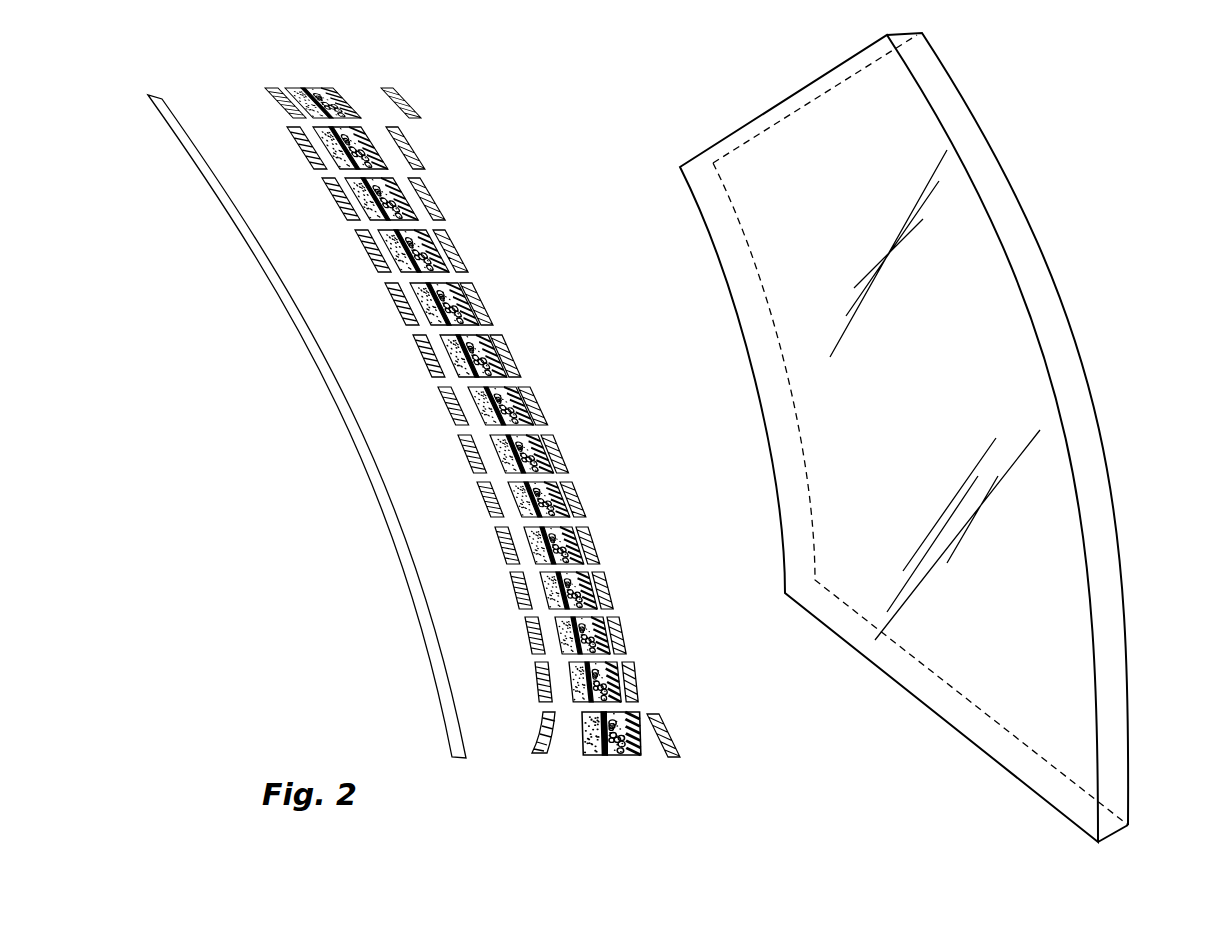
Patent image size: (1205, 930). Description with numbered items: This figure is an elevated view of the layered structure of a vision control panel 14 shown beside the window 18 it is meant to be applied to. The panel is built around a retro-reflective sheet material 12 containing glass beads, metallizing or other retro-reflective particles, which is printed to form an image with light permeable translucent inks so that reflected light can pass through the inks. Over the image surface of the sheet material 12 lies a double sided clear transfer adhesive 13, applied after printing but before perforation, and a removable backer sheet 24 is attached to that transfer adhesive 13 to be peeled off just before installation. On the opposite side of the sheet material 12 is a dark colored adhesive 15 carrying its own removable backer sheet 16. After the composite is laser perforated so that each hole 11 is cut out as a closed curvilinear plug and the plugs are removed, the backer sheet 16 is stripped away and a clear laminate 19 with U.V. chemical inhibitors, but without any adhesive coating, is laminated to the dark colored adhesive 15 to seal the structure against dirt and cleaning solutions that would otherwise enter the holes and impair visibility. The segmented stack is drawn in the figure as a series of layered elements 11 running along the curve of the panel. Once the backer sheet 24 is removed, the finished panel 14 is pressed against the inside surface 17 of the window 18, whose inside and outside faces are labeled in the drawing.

The hole 11 is at (497, 329).
The retro-reflective sheet material 12 is at (313, 86).
The double sided clear transfer adhesive 13 is at (640, 757).
The vision control panel 14 is at (493, 117).
The dark colored adhesive 15 is at (592, 757).
The removable backer sheet 16 is at (502, 556).
The inside surface 17 is at (742, 345).
The window 18 is at (1118, 840).
The clear laminate 19 is at (302, 349).
The removable backer sheet 24 is at (680, 757).